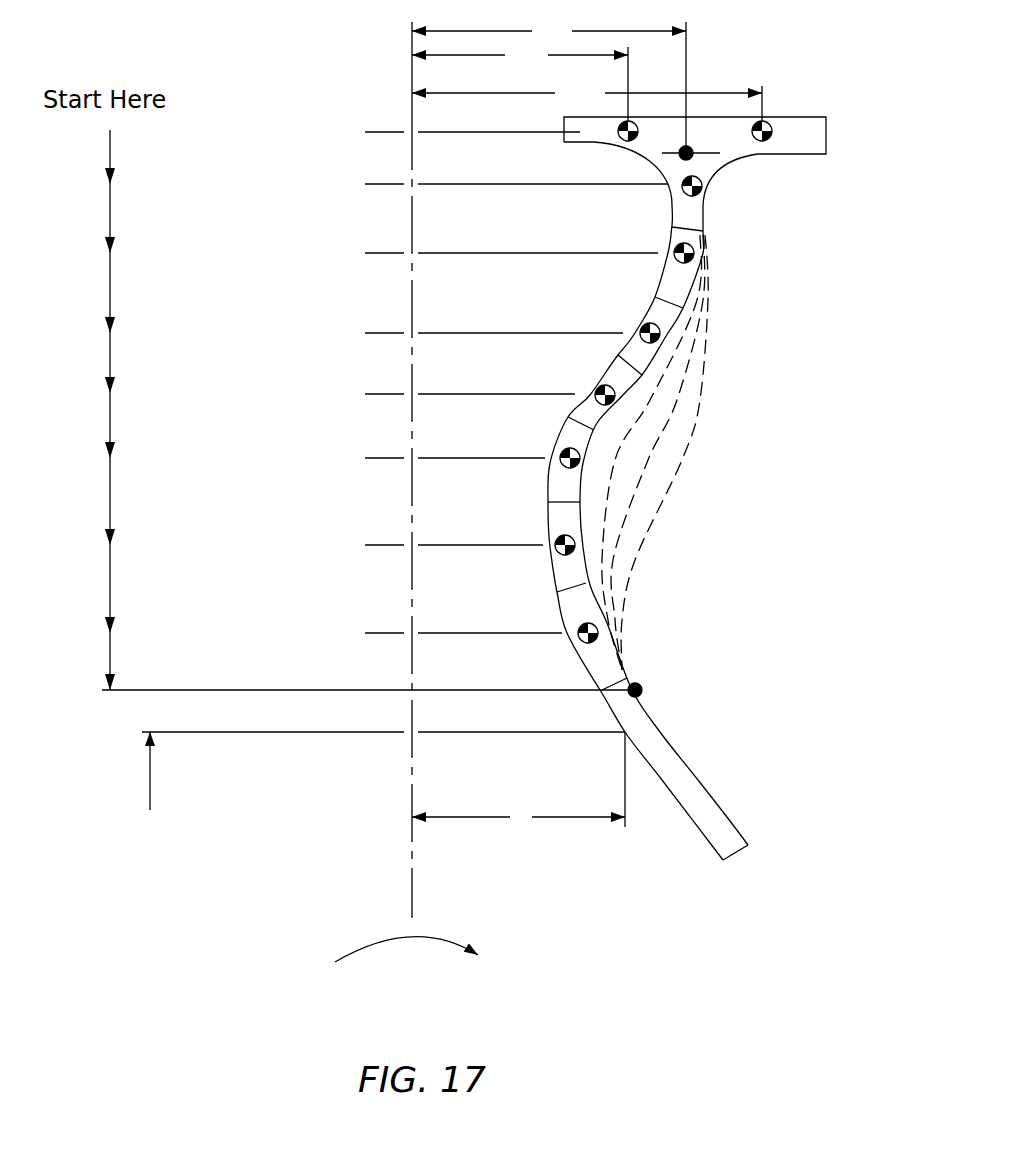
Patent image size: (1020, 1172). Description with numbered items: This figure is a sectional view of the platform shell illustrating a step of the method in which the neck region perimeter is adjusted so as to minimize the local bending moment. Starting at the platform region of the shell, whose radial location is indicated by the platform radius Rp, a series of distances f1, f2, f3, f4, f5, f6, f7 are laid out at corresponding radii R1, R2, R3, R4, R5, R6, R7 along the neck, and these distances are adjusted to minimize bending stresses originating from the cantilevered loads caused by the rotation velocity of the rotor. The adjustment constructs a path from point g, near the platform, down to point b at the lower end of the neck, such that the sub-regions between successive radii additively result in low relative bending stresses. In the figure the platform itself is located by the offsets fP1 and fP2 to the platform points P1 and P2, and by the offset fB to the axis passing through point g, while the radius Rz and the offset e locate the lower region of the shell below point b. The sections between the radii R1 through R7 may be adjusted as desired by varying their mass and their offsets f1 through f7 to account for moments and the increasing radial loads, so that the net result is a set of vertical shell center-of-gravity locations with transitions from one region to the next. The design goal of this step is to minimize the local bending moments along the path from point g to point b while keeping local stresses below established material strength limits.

The platform radius Rp is at (455, 132).
The radius at section 7 R7 is at (367, 184).
The radius at section 6 R6 is at (367, 253).
The radius at section 5 R5 is at (367, 334).
The radius at section 4 R4 is at (367, 394).
The radius at section 3 R3 is at (367, 458).
The radius at section 2 R2 is at (367, 545).
The radius R1 is at (367, 633).
The root radius Rz is at (131, 777).
The axial offset at section 7 f7 is at (543, 165).
The axial offset at section 6 f6 is at (538, 235).
The axial offset at section 5 f5 is at (520, 316).
The axial offset at section 4 f4 is at (496, 377).
The axial offset at section 3 f3 is at (481, 441).
The axial offset at section 2 f2 is at (480, 528).
The distance f1 is at (490, 619).
The axial offset of blade attachment fB is at (549, 78).
The axial offset of platform point P1 fP1 is at (520, 82).
The axial offset of platform point P2 fP2 is at (587, 99).
The platform point 1 P1 is at (622, 140).
The platform point 2 P2 is at (766, 140).
The point g is at (690, 159).
The point b is at (641, 688).
The eccentricity offset e is at (518, 816).